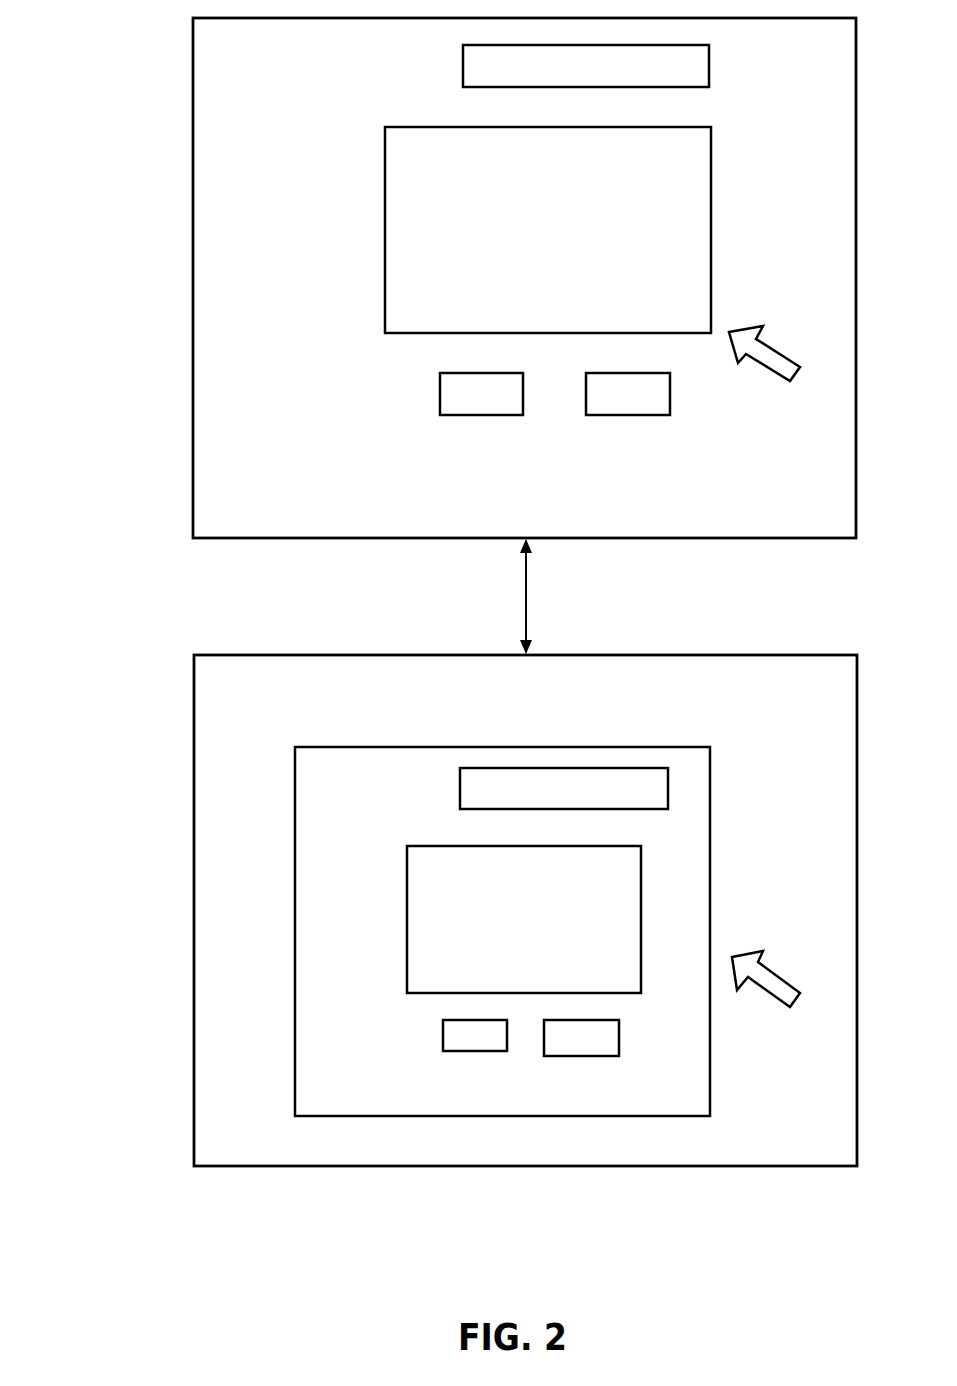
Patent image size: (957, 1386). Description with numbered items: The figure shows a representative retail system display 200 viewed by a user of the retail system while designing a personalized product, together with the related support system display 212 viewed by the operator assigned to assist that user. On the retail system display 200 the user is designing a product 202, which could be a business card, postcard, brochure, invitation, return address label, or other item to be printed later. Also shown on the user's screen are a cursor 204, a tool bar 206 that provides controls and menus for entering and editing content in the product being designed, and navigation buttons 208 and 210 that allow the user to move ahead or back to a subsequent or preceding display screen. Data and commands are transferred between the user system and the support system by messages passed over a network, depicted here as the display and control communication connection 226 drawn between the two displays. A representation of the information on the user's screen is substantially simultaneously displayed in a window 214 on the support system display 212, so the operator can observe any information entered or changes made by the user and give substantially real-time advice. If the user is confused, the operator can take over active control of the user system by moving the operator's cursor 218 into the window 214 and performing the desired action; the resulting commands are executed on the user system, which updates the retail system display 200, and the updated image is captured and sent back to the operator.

The retail system display 200 is at (182, 313).
The product 202 is at (375, 230).
The cursor 204 is at (780, 330).
The tool bar 206 is at (719, 74).
The navigation button 208 is at (483, 427).
The navigation button 210 is at (628, 428).
The support system display 212 is at (188, 897).
The window 214 is at (503, 736).
The operator's cursor 218 is at (774, 948).
The display and control communication connection 226 is at (540, 590).